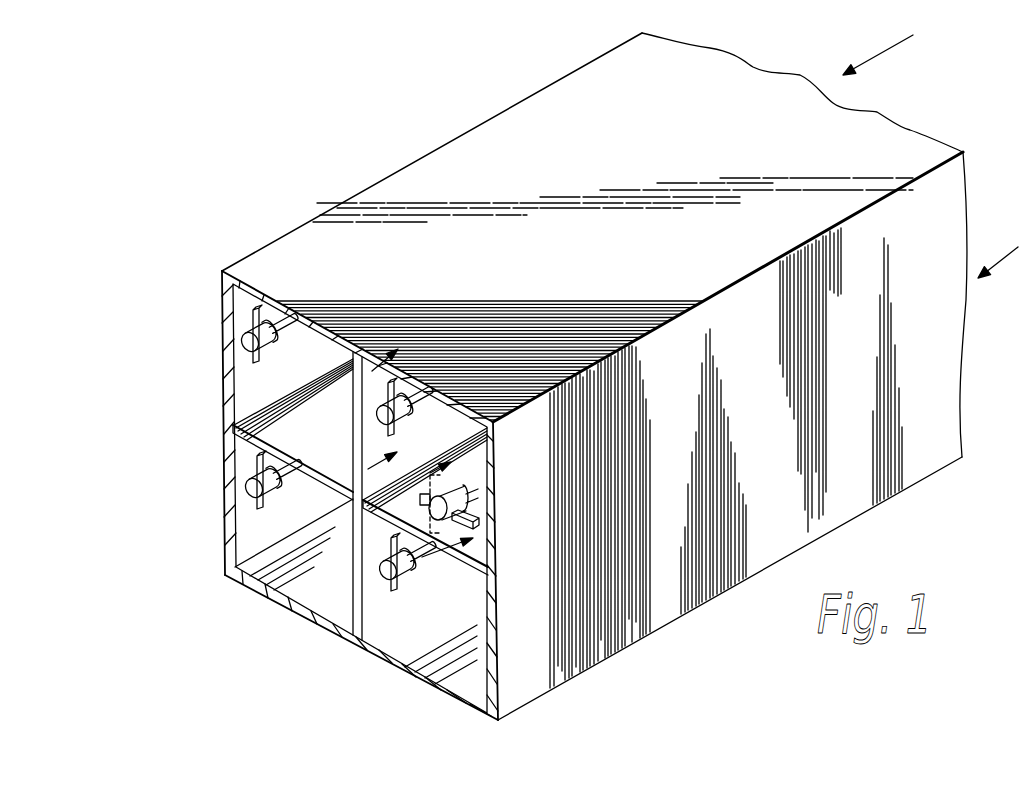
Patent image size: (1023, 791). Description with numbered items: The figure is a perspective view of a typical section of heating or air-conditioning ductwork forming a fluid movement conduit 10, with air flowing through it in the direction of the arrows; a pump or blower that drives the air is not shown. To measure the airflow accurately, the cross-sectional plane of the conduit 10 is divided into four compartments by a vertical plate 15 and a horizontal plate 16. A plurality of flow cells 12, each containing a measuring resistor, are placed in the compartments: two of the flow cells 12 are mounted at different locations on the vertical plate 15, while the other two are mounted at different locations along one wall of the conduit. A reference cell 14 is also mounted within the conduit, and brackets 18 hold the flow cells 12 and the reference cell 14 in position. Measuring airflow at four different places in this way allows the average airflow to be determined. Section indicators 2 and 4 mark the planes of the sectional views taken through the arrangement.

The fluid movement conduit 10 is at (351, 188).
The flow cell 12 is at (281, 332).
The reference cell 14 is at (467, 493).
The vertical plate 15 is at (355, 577).
The horizontal plate 16 is at (252, 424).
The bracket 18 is at (270, 350).
The section line 2- 2 is at (392, 405).
The section line 4- 4 is at (456, 502).